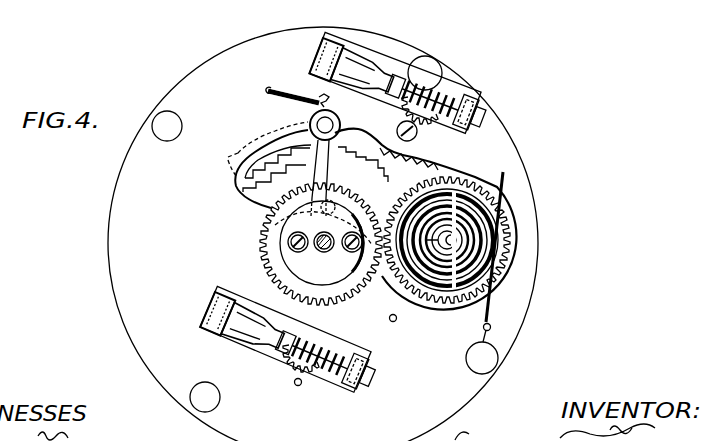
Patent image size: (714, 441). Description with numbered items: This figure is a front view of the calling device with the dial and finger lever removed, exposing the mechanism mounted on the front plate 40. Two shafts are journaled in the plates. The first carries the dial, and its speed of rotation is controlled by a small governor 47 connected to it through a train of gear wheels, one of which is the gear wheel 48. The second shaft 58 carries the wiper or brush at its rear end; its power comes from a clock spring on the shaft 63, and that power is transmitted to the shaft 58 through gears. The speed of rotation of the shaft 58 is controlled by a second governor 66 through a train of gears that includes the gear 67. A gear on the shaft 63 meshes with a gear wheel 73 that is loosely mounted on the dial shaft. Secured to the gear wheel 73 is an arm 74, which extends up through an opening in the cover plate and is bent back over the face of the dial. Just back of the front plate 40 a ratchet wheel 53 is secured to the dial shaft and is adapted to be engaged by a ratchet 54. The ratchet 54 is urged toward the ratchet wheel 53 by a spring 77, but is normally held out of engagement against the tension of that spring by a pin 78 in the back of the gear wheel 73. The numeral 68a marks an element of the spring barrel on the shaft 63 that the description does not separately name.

The plate 40 is at (537, 216).
The governor 47 is at (461, 97).
The gear wheel 48 is at (408, 108).
The ratchet wheel 53 is at (236, 175).
The ratchet 54 is at (254, 143).
The shaft 58 is at (394, 322).
The shaft 63 is at (476, 212).
The governor 66 is at (296, 341).
The gear 67 is at (300, 365).
The mainspring 68a is at (461, 197).
The gear wheel 73 is at (268, 238).
The arm 74 is at (386, 172).
The spring 77 is at (300, 92).
The pin 78 is at (282, 212).